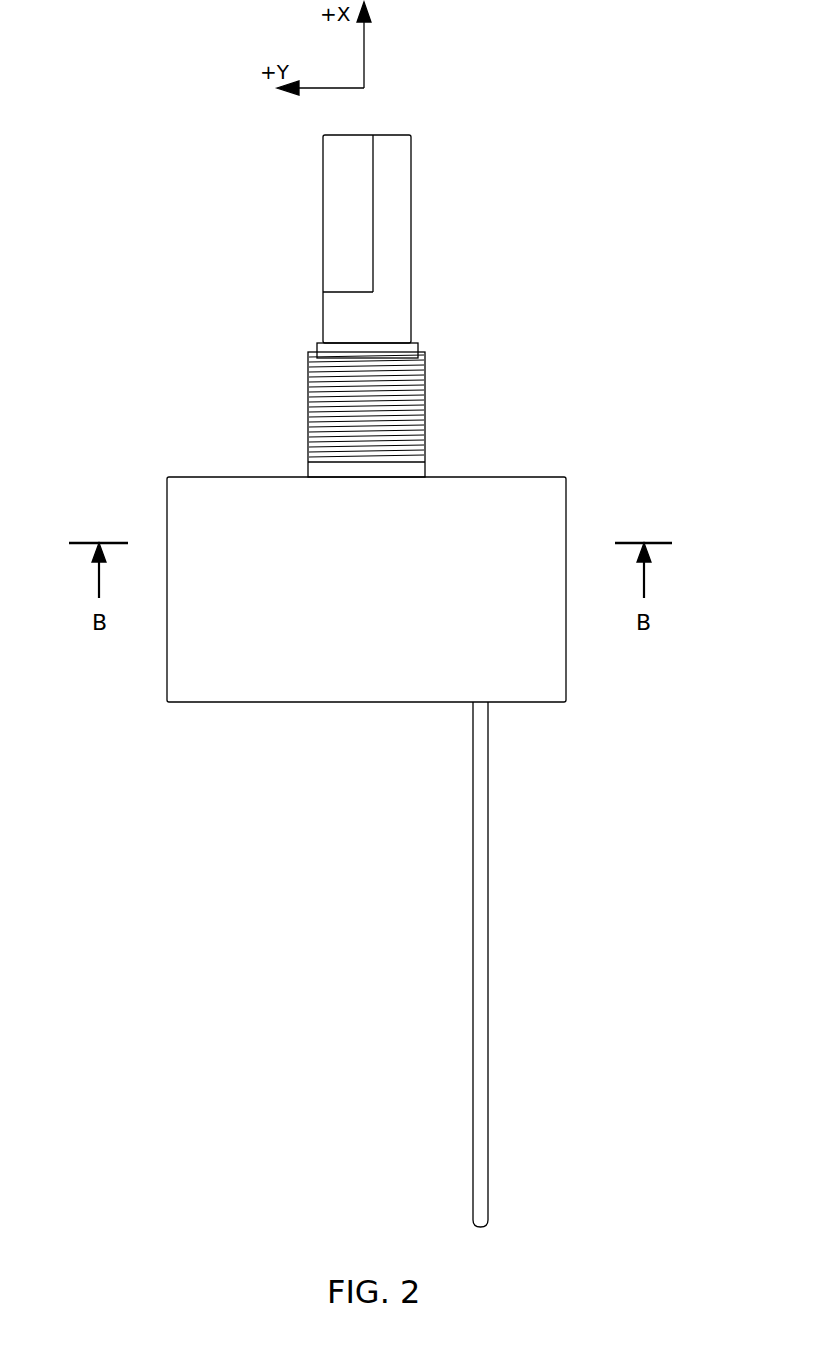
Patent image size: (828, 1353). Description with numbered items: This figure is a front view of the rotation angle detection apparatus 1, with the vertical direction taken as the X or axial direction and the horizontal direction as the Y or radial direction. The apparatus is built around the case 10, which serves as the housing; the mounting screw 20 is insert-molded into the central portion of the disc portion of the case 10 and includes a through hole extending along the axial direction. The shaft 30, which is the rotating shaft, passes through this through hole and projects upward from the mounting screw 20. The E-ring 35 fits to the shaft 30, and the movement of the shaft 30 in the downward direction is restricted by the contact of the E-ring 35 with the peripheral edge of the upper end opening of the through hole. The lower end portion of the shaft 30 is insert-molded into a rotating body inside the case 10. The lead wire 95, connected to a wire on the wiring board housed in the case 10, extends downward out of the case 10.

The rotation angle detection apparatus 1 is at (556, 182).
The case 10 is at (525, 477).
The mounting screw 20 is at (424, 388).
The shaft 30 is at (411, 270).
The E-ring 35 is at (417, 343).
The lead wire 95 is at (490, 808).